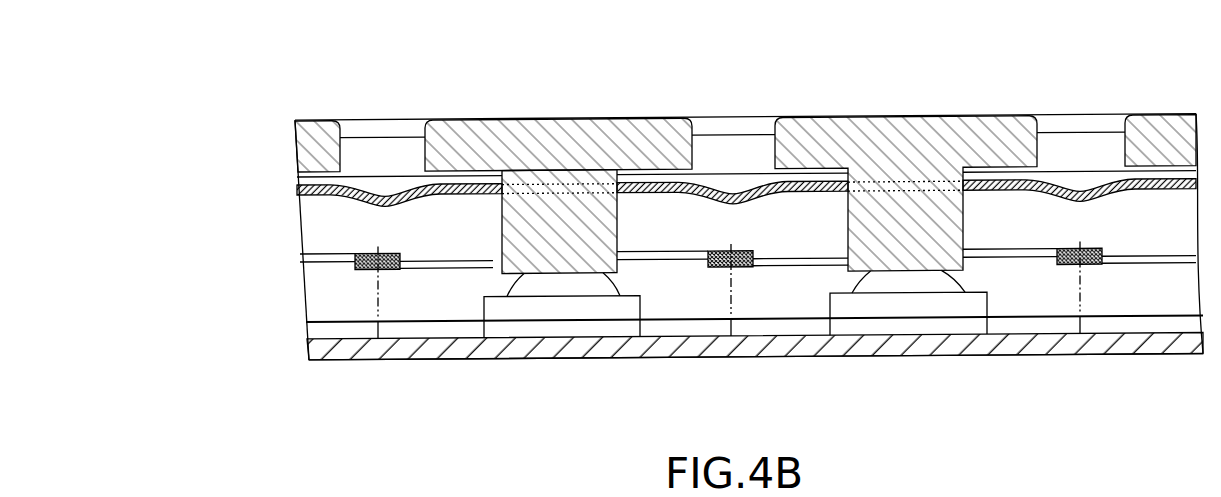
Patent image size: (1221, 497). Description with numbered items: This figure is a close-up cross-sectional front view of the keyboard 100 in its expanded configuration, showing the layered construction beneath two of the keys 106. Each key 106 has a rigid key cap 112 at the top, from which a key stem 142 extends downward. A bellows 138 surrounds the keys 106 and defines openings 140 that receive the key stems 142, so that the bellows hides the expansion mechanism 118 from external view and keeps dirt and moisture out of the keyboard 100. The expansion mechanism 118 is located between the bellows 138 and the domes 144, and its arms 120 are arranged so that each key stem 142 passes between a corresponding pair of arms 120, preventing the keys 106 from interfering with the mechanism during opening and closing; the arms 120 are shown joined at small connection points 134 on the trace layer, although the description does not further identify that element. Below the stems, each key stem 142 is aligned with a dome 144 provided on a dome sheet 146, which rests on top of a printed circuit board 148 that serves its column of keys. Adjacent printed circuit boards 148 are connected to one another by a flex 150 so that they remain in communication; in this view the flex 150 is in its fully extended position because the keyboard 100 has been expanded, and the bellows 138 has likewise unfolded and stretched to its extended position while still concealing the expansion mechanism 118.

The keyboard 100 is at (250, 109).
The key 106 is at (571, 220).
The key cap 112 is at (658, 138).
The expansion mechanism 118 is at (1139, 283).
The arm 120 is at (1005, 252).
The via contact 134 is at (1088, 263).
The bellows 138 is at (400, 192).
The opening 140 is at (838, 182).
The key stem 142 is at (603, 258).
The dome 144 is at (527, 287).
The dome sheet 146 is at (574, 310).
The printed circuit board 148 is at (502, 330).
The flex 150 is at (785, 327).